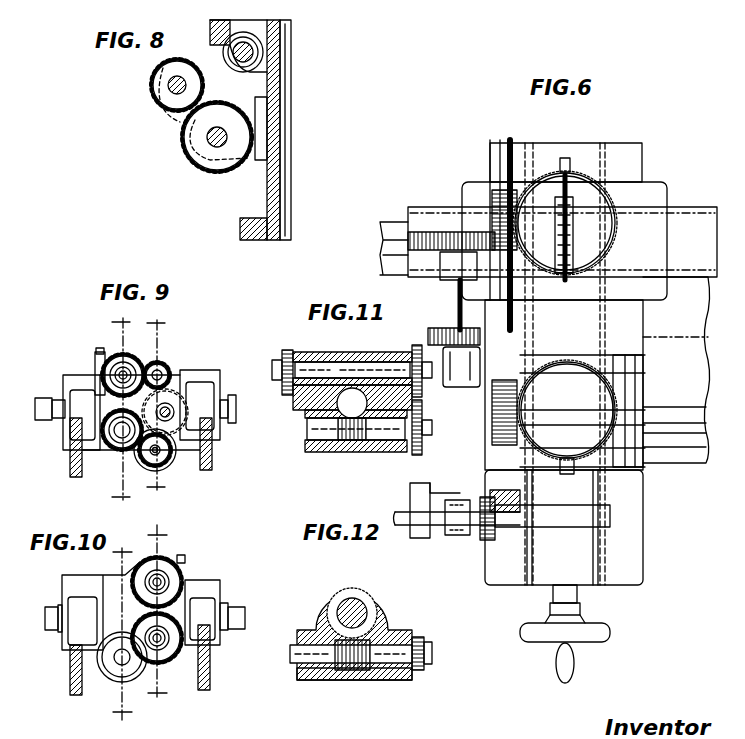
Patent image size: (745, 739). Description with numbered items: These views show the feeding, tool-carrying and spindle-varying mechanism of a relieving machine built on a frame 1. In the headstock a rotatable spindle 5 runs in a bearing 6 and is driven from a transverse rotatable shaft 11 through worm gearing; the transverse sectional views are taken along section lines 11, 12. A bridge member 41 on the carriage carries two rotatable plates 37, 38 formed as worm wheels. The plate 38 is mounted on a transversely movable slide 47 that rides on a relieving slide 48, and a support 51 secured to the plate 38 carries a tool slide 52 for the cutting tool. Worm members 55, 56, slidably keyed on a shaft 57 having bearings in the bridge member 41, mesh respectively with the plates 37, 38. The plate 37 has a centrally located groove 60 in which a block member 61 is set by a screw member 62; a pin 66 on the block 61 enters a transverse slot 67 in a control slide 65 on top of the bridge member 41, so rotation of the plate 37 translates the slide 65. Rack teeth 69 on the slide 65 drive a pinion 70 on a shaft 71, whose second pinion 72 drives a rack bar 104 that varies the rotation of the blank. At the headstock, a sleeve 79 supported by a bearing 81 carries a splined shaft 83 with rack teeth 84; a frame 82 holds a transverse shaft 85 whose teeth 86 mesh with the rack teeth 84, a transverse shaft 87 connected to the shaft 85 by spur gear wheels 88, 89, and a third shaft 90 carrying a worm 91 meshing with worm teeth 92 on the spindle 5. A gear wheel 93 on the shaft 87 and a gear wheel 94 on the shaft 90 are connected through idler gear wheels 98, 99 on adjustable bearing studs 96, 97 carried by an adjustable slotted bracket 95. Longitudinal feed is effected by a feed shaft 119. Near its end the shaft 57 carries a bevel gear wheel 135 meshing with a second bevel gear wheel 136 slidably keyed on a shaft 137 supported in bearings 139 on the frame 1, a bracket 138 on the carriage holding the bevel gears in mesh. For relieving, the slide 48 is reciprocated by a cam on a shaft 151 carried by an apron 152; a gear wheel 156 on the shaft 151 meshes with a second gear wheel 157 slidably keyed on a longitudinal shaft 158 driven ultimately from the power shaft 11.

In FIG. 8, the frame 1 is at (275, 160).
In FIG. 9, the rotatable spindle 5 is at (220, 375).
In FIG. 10, the rotatable spindle 5 is at (62, 592).
In FIG. 9, the bearing 6 is at (212, 455).
In FIG. 10, the bearing 6 is at (70, 668).
In FIG. 9, the transverse rotatable shaft 11 is at (120, 409).
In FIG. 10, the transverse rotatable shaft 11 is at (156, 619).
In FIG. 9, the section line 12 is at (155, 405).
In FIG. 10, the section line 12 is at (121, 634).
In FIG. 6, the rotatable plate 37 is at (580, 175).
In FIG. 6, the rotatable plate 38 is at (612, 375).
In FIG. 6, the bridge member 41 is at (650, 182).
In FIG. 6, the transversely movable slide 47 is at (643, 316).
In FIG. 6, the relieving slide 48 is at (643, 553).
In FIG. 6, the support 51 is at (610, 365).
In FIG. 6, the tool slide 52 is at (643, 392).
In FIG. 6, the worm member 55 is at (492, 195).
In FIG. 6, the worm member 56 is at (492, 440).
In FIG. 6, the shaft 57 is at (500, 142).
In FIG. 6, the centrally located groove 60 is at (570, 202).
In FIG. 6, the block member 61 is at (573, 240).
In FIG. 6, the screw member 62 is at (563, 158).
In FIG. 6, the control slide 65 is at (706, 207).
In FIG. 6, the pin 66 is at (588, 240).
In FIG. 6, the transverse slot 67 is at (555, 265).
In FIG. 6, the rack teeth 69 is at (435, 232).
In FIG. 6, the pinion 70 is at (445, 265).
In FIG. 6, the shaft 71 is at (458, 308).
In FIG. 6, the second pinion 72 is at (475, 387).
In FIG. 9, the sleeve 79 is at (60, 400).
In FIG. 10, the sleeve 79 is at (226, 603).
In FIG. 12, the sleeve 79 is at (377, 612).
In FIG. 9, the bearing 81 is at (70, 455).
In FIG. 10, the bearing 81 is at (210, 660).
In FIG. 9, the frame 82 is at (170, 470).
In FIG. 11, the frame 82 is at (318, 452).
In FIG. 10, the frame 82 is at (110, 680).
In FIG. 12, the frame 82 is at (362, 682).
In FIG. 9, the shaft 83 is at (35, 412).
In FIG. 11, the shaft 83 is at (305, 405).
In FIG. 10, the shaft 83 is at (245, 612).
In FIG. 12, the shaft 83 is at (375, 592).
In FIG. 9, the rack teeth 84 is at (232, 423).
In FIG. 10, the rack teeth 84 is at (50, 630).
In FIG. 11, the transverse shaft 85 is at (383, 452).
In FIG. 10, the transverse shaft 85 is at (168, 655).
In FIG. 11, the teeth 86 is at (345, 440).
In FIG. 9, the transverse shaft 87 is at (115, 375).
In FIG. 11, the transverse shaft 87 is at (365, 362).
In FIG. 10, the transverse shaft 87 is at (160, 580).
In FIG. 9, the spur gear wheel 88 is at (110, 448).
In FIG. 11, the spur gear wheel 88 is at (417, 455).
In FIG. 10, the spur gear wheel 88 is at (165, 660).
In FIG. 6, the spur gear wheel 89 is at (412, 346).
In FIG. 9, the spur gear wheel 89 is at (118, 352).
In FIG. 11, the spur gear wheel 89 is at (422, 371).
In FIG. 10, the spur gear wheel 89 is at (185, 570).
In FIG. 9, the third rotatable shaft 90 is at (172, 455).
In FIG. 10, the third rotatable shaft 90 is at (110, 670).
In FIG. 12, the third rotatable shaft 90 is at (390, 682).
In FIG. 12, the worm 91 is at (340, 672).
In FIG. 12, the worm teeth 92 is at (345, 598).
In FIG. 9, the gear wheel 93 is at (100, 362).
In FIG. 11, the gear wheel 93 is at (286, 350).
In FIG. 9, the gear wheel 94 is at (160, 470).
In FIG. 12, the gear wheel 94 is at (422, 640).
In FIG. 9, the adjustable slotted bracket 95 is at (165, 372).
In FIG. 9, the adjustable bearing stud 96 is at (160, 362).
In FIG. 9, the adjustable bearing stud 97 is at (175, 400).
In FIG. 9, the idler gear wheel 98 is at (155, 362).
In FIG. 9, the idler gear wheel 99 is at (172, 405).
In FIG. 6, the bar 104 is at (428, 332).
In FIG. 8, the feed shaft 119 is at (243, 45).
In FIG. 6, the bevel gear wheel 135 is at (520, 498).
In FIG. 6, the second bevel gear wheel 136 is at (488, 540).
In FIG. 6, the shaft 137 is at (405, 530).
In FIG. 6, the bracket 138 is at (430, 490).
In FIG. 6, the bearings 139 is at (440, 535).
In FIG. 8, the shaft 151 is at (173, 94).
In FIG. 8, the apron 152 is at (182, 118).
In FIG. 8, the gear wheel 156 is at (150, 88).
In FIG. 8, the second gear wheel 157 is at (190, 160).
In FIG. 8, the longitudinal shaft 158 is at (225, 148).